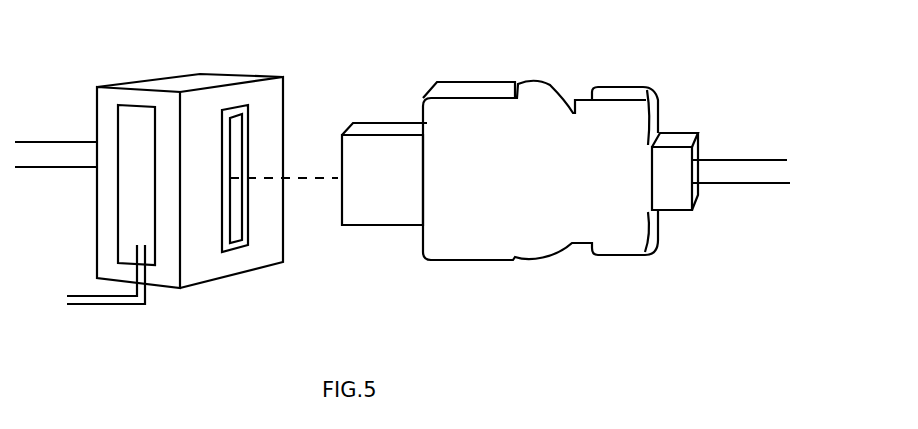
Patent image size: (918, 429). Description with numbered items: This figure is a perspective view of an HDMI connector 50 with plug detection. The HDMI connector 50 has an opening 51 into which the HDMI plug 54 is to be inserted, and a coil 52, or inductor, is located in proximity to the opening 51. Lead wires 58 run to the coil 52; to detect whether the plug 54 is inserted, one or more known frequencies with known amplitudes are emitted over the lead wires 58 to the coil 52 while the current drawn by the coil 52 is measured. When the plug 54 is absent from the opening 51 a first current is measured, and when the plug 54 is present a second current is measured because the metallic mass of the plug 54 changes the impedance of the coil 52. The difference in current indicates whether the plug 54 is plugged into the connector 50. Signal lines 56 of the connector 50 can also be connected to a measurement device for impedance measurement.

The HDMI connector 50 is at (200, 78).
The opening 51 is at (243, 125).
The coil 52 is at (127, 125).
The HDMI plug 54 is at (477, 95).
The signal lines 56 is at (50, 142).
The lead wires 58 is at (85, 304).